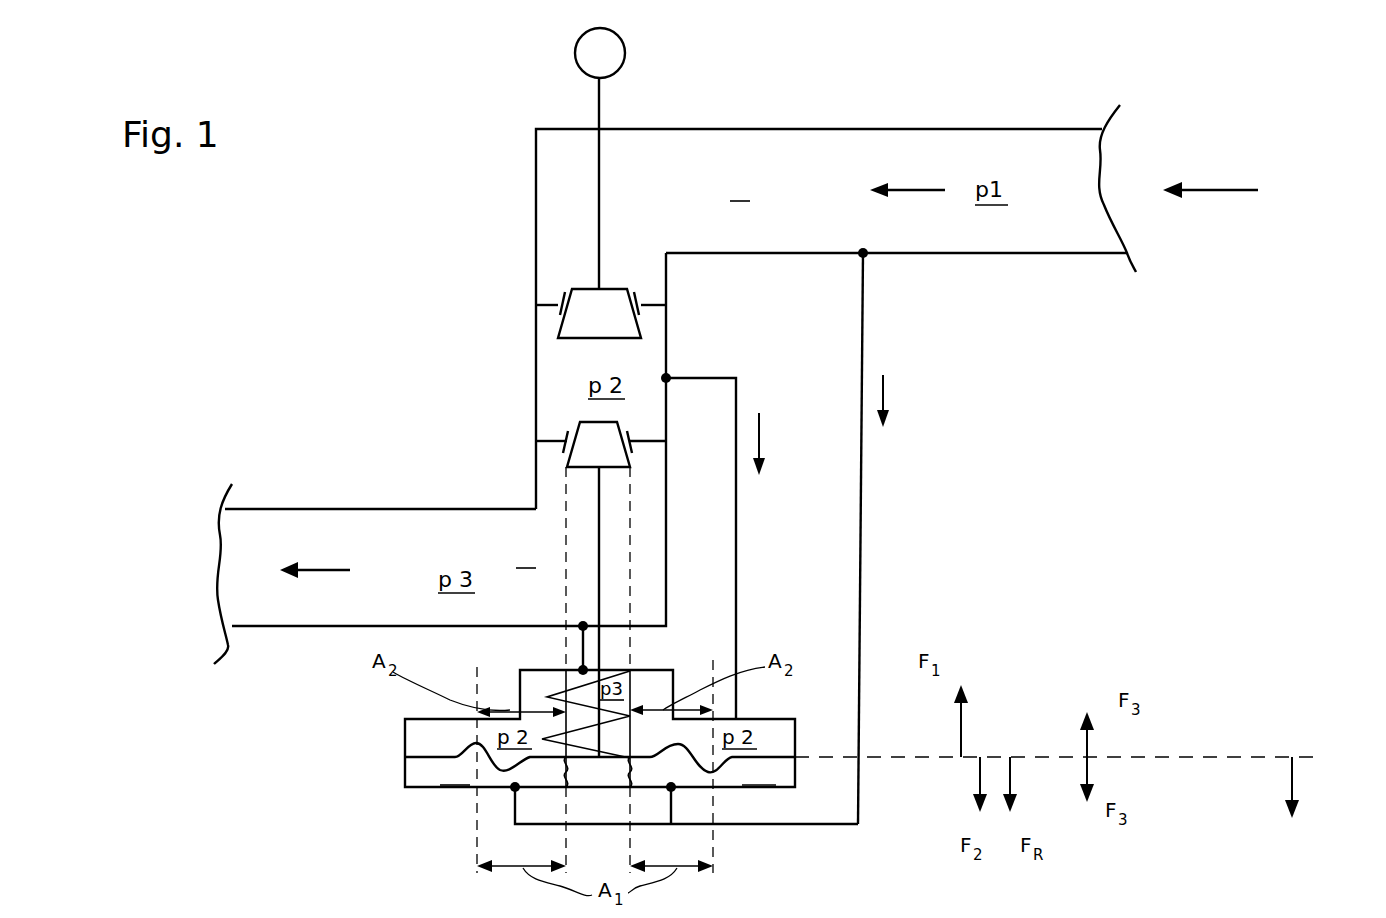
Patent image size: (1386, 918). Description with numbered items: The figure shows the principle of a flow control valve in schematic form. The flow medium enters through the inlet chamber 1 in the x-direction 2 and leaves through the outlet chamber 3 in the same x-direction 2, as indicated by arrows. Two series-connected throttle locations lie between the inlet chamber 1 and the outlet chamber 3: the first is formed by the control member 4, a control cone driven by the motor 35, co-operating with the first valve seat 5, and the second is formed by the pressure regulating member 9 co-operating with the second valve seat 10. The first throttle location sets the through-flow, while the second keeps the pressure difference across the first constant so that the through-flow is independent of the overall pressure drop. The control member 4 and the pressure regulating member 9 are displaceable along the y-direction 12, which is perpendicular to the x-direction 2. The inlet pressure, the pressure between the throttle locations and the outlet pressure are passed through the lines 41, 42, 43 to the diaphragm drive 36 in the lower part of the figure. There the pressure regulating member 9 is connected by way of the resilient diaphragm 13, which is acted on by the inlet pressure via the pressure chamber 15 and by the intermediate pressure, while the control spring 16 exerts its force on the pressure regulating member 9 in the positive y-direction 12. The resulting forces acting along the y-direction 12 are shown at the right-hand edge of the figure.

The inlet chamber 1 is at (836, 307).
The x-direction 2 is at (1222, 190).
The outlet chamber 3 is at (440, 458).
The control member 4 is at (585, 302).
The first valve seat 5 is at (557, 312).
The pressure regulating member 9 is at (588, 433).
The second valve seat 10 is at (560, 447).
The y-direction 12 is at (1293, 775).
The resilient diaphragm 13 is at (472, 744).
The pressure chamber 15 is at (425, 770).
The control spring 16 is at (557, 693).
The motor 35 is at (626, 50).
The diaphragm drive 36 is at (405, 775).
The line 41 is at (864, 310).
The line 42 is at (706, 378).
The line 43 is at (588, 646).